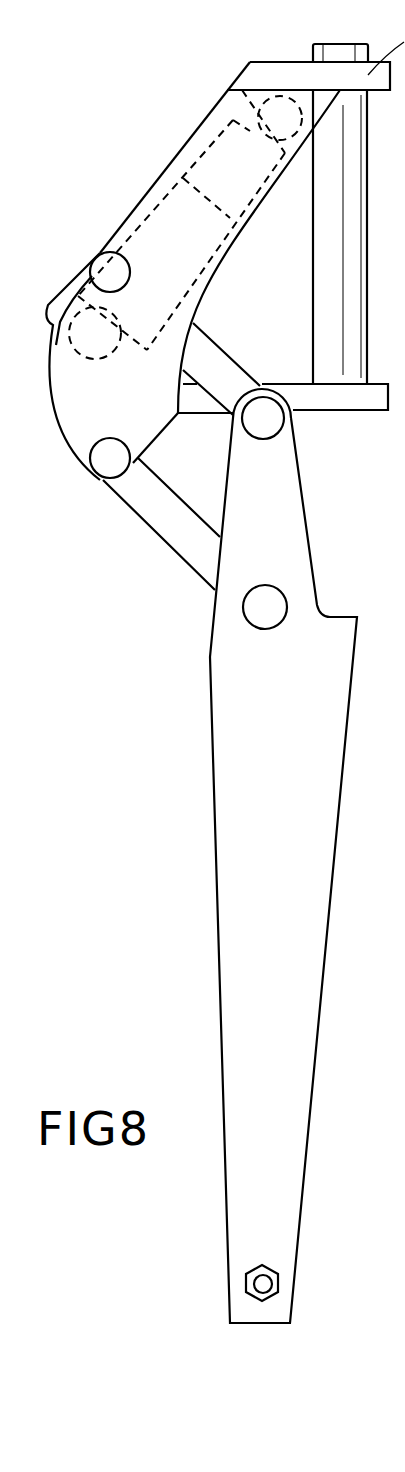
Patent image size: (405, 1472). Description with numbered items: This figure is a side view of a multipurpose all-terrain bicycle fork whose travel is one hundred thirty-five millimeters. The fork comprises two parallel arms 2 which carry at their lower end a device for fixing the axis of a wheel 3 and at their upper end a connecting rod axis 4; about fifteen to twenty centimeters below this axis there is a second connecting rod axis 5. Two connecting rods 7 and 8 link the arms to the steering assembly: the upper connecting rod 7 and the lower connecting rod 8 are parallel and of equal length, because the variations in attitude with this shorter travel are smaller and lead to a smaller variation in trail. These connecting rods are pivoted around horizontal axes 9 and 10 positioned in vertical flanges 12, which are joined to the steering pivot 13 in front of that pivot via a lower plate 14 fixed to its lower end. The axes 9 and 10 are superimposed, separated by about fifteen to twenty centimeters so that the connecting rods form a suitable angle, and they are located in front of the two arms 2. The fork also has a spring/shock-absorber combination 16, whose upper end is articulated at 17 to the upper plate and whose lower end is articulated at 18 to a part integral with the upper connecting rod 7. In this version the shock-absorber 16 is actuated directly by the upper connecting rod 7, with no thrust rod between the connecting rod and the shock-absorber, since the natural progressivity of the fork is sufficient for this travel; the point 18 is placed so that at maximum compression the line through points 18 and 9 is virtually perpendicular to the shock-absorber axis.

The parallel arms 2 is at (240, 790).
The wheel axis fixing device 3 is at (250, 1280).
The connecting rod axis 4 is at (273, 422).
The second connecting rod axis 5 is at (258, 607).
The upper connecting rod 7 is at (222, 378).
The lower connecting rod 8 is at (168, 528).
The horizontal axis 9 is at (104, 270).
The horizontal axis 10 is at (107, 467).
The vertical flanges 12 is at (118, 405).
The steering pivot 13 is at (348, 288).
The lower plate 14 is at (357, 402).
The spring/shock-absorber combination 16 is at (188, 172).
The upper articulation point 17 is at (275, 112).
The lower articulation point 18 is at (100, 343).